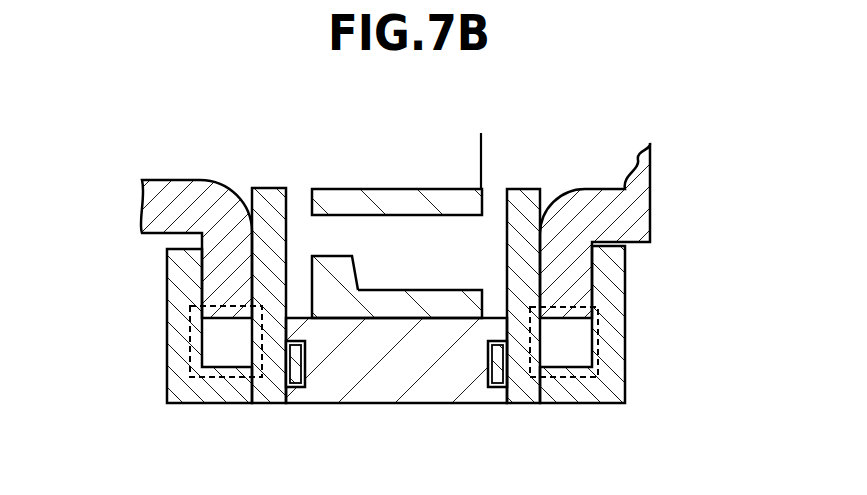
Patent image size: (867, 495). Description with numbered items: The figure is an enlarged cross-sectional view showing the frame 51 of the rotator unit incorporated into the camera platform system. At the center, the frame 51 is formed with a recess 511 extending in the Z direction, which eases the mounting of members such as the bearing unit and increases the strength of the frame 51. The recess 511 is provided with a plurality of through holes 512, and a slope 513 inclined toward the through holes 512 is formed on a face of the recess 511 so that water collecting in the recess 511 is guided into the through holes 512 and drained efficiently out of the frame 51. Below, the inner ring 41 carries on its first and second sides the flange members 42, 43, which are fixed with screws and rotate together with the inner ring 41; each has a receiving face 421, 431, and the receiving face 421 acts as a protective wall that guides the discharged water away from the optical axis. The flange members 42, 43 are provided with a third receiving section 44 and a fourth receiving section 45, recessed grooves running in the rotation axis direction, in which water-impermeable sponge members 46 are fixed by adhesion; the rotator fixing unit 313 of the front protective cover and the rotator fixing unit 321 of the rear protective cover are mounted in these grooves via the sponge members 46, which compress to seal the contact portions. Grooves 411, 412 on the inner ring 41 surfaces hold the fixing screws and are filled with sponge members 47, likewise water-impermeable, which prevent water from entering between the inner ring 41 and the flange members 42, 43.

The inner ring 41 is at (392, 350).
The groove 411 is at (295, 388).
The groove 412 is at (497, 388).
The flange member 42 is at (214, 297).
The receiving face 421 is at (267, 202).
The flange member 43 is at (599, 290).
The receiving face 431 is at (523, 200).
The third receiving section 44 is at (222, 378).
The fourth receiving section 45 is at (560, 378).
The sponge member 46 is at (222, 342).
The sponge member 47 is at (503, 342).
The frame 51 is at (394, 206).
The recess 511 is at (415, 290).
The through holes 512 is at (352, 200).
The slope 513 is at (357, 267).
The rotator fixing unit 313 is at (200, 210).
The rotator fixing unit 321 is at (595, 213).